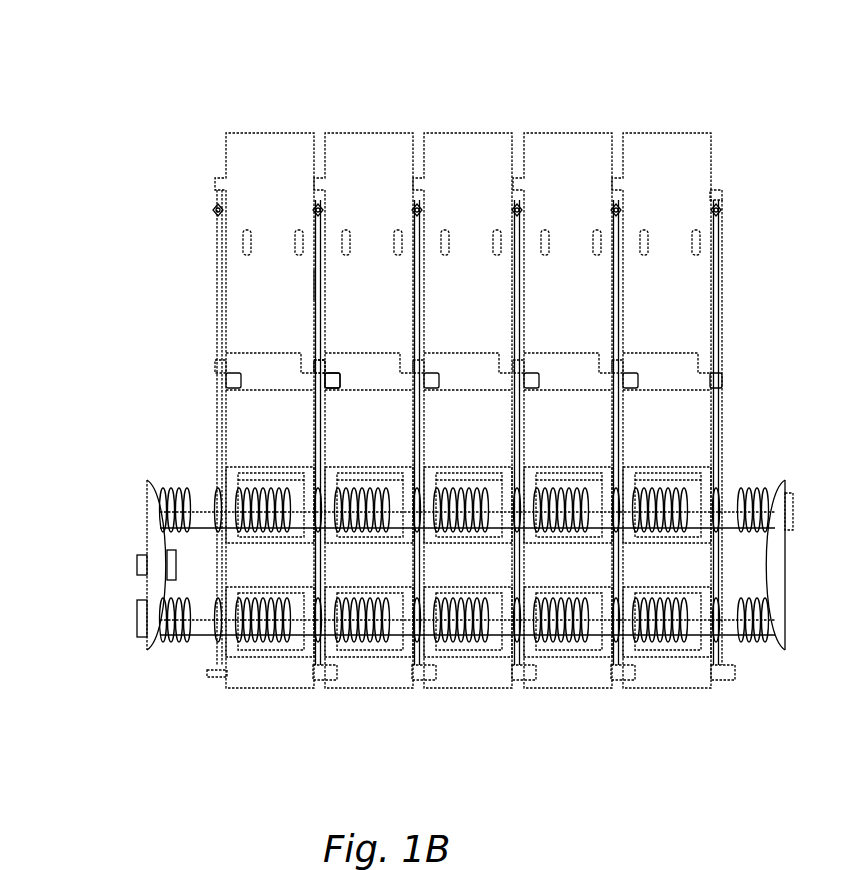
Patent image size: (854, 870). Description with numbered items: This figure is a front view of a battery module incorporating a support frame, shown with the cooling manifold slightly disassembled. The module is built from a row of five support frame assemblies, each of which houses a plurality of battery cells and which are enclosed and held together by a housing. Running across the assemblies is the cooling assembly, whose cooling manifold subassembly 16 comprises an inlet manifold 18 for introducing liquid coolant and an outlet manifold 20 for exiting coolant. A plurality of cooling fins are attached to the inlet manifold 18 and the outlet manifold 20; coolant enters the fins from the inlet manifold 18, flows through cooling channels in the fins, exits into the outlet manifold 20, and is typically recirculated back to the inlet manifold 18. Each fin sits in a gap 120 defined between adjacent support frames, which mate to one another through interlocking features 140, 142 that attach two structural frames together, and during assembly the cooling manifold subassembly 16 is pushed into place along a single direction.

The cooling manifold subassembly 16 is at (73, 518).
The inlet manifold 18 is at (163, 598).
The outlet manifold 20 is at (183, 487).
The gap 120 is at (320, 283).
The interlocking feature 140 is at (305, 383).
The interlocking feature 142 is at (318, 363).